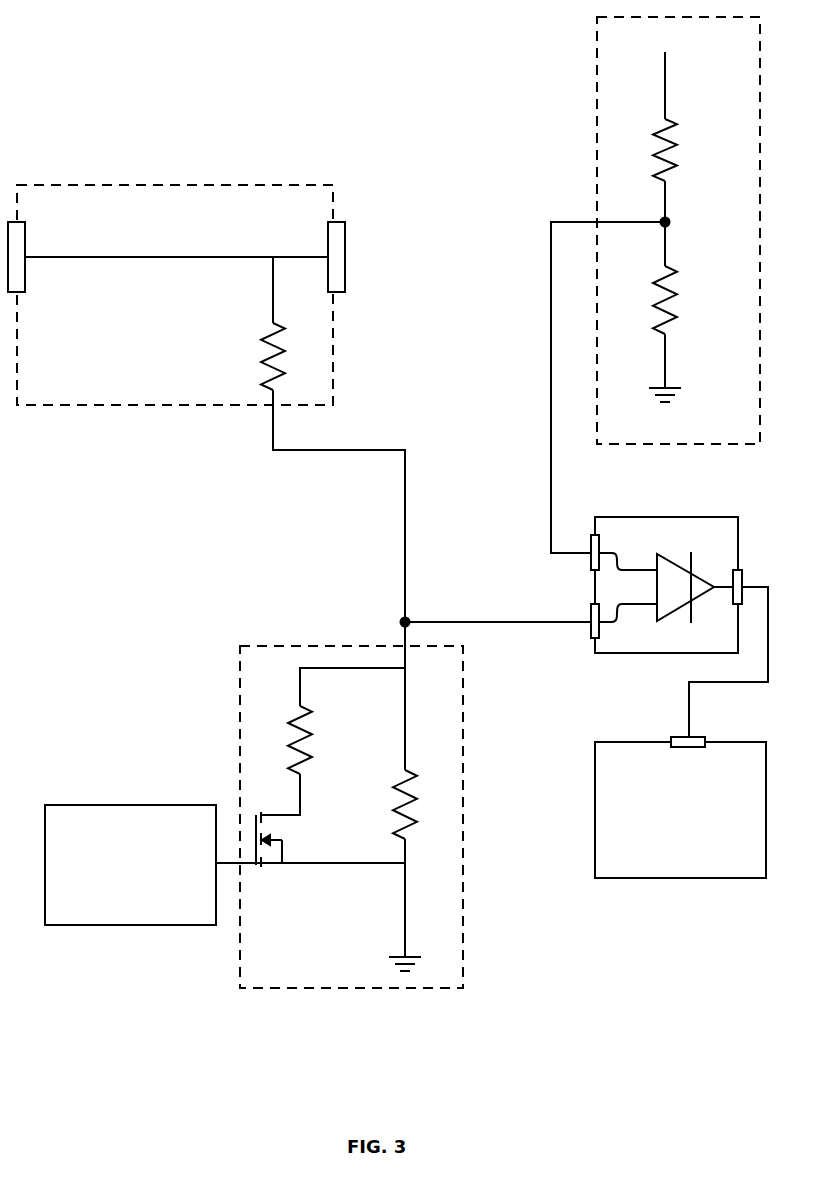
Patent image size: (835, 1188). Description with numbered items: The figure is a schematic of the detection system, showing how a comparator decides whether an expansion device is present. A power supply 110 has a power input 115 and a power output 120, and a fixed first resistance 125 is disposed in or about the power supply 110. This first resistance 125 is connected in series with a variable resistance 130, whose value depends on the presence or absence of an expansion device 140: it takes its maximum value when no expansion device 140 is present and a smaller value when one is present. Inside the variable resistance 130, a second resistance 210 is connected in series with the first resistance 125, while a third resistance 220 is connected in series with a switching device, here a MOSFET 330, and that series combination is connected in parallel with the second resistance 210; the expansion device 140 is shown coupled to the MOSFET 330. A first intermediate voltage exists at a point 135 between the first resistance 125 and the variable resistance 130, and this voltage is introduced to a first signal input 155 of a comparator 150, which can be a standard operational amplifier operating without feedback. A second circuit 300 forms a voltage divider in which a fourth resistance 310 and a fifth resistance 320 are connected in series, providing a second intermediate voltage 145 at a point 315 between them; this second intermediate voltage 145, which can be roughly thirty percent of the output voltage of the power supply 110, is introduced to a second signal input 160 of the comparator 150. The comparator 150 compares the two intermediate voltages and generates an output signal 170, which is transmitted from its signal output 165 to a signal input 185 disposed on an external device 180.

The power supply 110 is at (272, 185).
The power input 115 is at (25, 292).
The power output 120 is at (333, 222).
The first resistance 125 is at (250, 356).
The variable resistance 130 is at (358, 988).
The point 135 is at (405, 622).
The expansion device 140 is at (148, 874).
The second intermediate voltage 145 is at (551, 318).
The comparator 150 is at (685, 587).
The first signal input 155 is at (599, 622).
The second signal input 160 is at (599, 553).
The signal output 165 is at (742, 570).
The output signal 170 is at (689, 705).
The external device 180 is at (697, 818).
The signal input 185 is at (684, 747).
The second resistance 210 is at (384, 804).
The third resistance 220 is at (321, 740).
The second circuit 300 is at (597, 170).
The fourth resistance 310 is at (689, 150).
The point 315 is at (665, 222).
The fifth resistance 320 is at (689, 300).
The MOSFET 330 is at (273, 853).